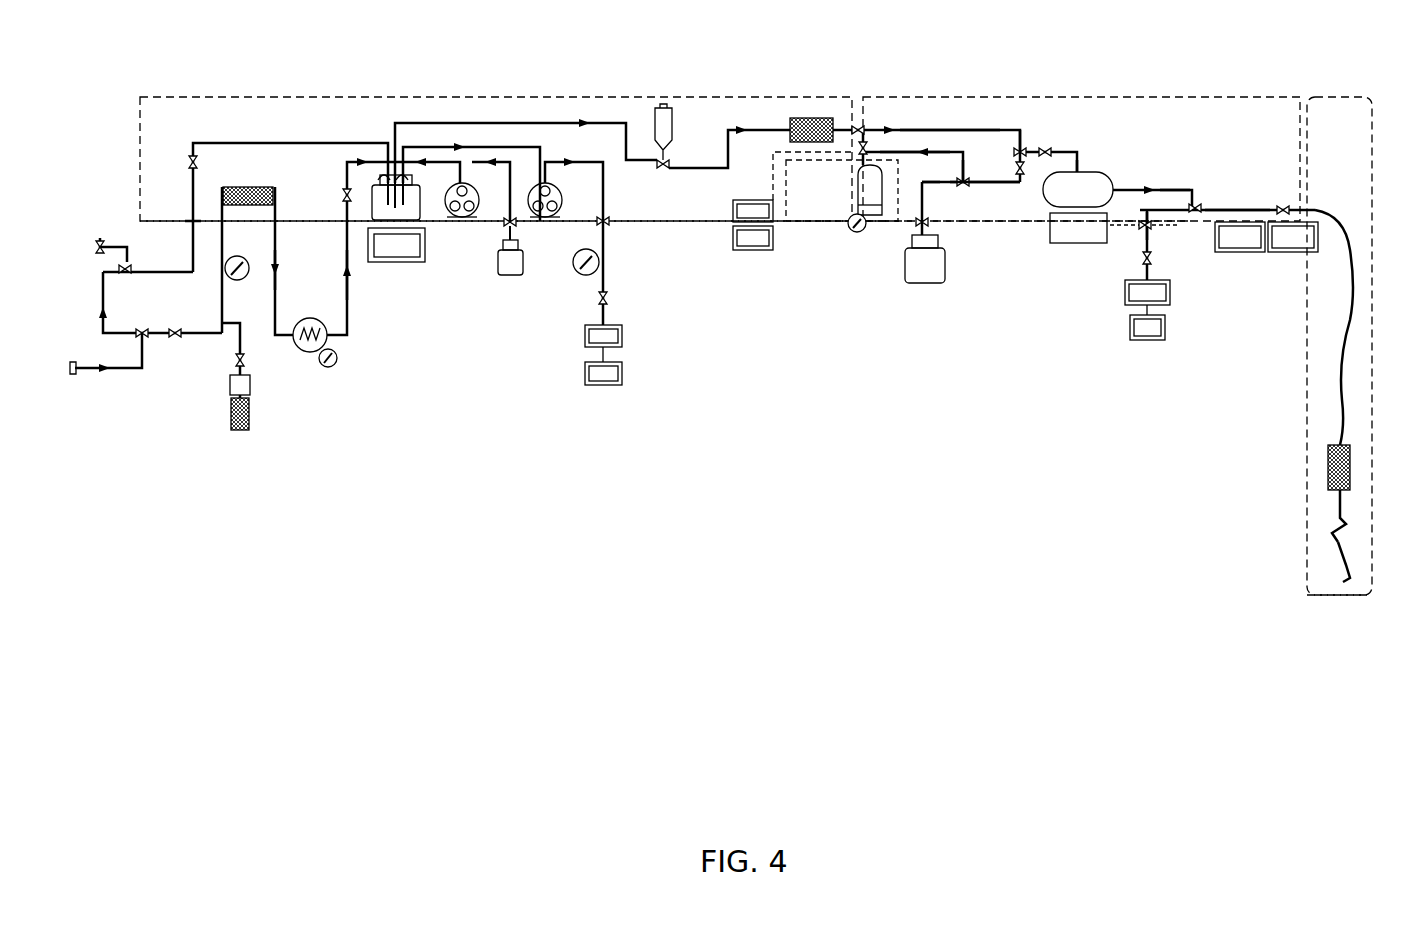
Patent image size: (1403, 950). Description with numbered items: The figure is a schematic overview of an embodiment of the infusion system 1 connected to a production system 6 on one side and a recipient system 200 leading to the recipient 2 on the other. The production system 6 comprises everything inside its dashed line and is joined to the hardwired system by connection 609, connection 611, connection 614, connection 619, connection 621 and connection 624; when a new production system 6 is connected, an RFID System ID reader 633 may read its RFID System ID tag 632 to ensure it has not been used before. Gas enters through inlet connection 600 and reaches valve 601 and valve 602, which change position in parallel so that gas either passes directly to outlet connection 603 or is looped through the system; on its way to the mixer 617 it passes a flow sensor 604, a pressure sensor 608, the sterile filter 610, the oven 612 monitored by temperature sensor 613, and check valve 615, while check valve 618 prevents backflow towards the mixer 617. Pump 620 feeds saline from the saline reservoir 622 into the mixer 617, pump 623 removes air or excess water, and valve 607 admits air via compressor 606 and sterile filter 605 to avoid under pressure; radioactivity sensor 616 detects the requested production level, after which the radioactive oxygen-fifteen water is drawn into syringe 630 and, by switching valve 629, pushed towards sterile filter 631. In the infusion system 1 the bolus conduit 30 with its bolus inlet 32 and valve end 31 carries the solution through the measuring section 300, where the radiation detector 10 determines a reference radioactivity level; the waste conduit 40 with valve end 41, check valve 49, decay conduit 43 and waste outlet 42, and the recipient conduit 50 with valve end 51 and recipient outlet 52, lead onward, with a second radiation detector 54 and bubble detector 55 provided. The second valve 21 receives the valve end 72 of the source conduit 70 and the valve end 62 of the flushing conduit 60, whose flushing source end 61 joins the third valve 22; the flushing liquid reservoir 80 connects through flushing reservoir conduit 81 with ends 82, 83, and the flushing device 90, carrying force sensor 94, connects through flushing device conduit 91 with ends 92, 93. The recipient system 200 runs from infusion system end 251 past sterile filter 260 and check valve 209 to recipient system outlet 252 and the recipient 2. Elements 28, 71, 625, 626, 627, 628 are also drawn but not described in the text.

The infusion system 1 is at (1099, 70).
The recipient 2 is at (1339, 611).
The production system 6 is at (503, 66).
The radiation detector 10 is at (1078, 228).
The second valve 21 is at (1009, 146).
The third valve 22 is at (962, 193).
The control line 28 is at (1153, 226).
The bolus conduit 30 is at (1097, 166).
The valve end 31 is at (1186, 185).
The bolus inlet 32 is at (1048, 145).
The waste conduit 40 is at (1136, 220).
The valve end 41 is at (1180, 203).
The waste outlet 42 is at (1147, 322).
The decay conduit 43 is at (1147, 292).
The check valve 49 is at (1157, 259).
The recipient conduit 50 is at (1250, 200).
The valve end 51 is at (1217, 200).
The recipient outlet 52 is at (1284, 202).
The second radiation detector 54 is at (1240, 237).
The bubble detector 55 is at (1293, 237).
The flushing conduit 60 is at (1015, 194).
The flushing source end 61 is at (990, 173).
The valve end 62 is at (1030, 171).
The source conduit 70 is at (950, 121).
The valve 71 is at (871, 121).
The valve end 72 is at (1035, 131).
The flushing liquid reservoir 80 is at (936, 259).
The flushing reservoir conduit 81 is at (922, 175).
The end 82 is at (931, 214).
The end 83 is at (952, 176).
The flushing device 90 is at (860, 190).
The flushing device conduit 91 is at (915, 144).
The end 92 is at (873, 151).
The end 93 is at (972, 164).
The force sensor 94 is at (855, 231).
The recipient system 200 is at (1351, 88).
The check valve 209 is at (1333, 531).
The infusion system end 251 is at (1334, 318).
The recipient system outlet 252 is at (1348, 571).
The sterile filter 260 is at (1328, 470).
The measuring section 300 is at (1078, 189).
The inlet connection 600 is at (89, 379).
The valve 601 is at (137, 325).
The valve 602 is at (121, 279).
The outlet connection 603 is at (99, 239).
The flow sensor 604 is at (171, 325).
The sterile filter 605 is at (257, 414).
The compressor 606 is at (257, 386).
The valve 607 is at (257, 361).
The pressure sensor 608 is at (240, 276).
The connection 609 is at (237, 236).
The sterile filter 610 is at (248, 187).
The connection 611 is at (295, 260).
The oven 612 is at (310, 327).
The temperature sensor 613 is at (346, 357).
The connection 614 is at (327, 274).
The check valve 615 is at (331, 195).
The radioactivity sensor 616 is at (396, 245).
The mixer 617 is at (423, 198).
The check valve 618 is at (177, 165).
The connection 619 is at (180, 234).
The pump 620 is at (472, 195).
The connection 621 is at (497, 232).
The saline reservoir 622 is at (509, 268).
The pump 623 is at (560, 195).
The connection 624 is at (590, 231).
The pressure gauge 625 is at (572, 269).
The valve 626 is at (619, 300).
The sensor 627 is at (603, 336).
The sensor 628 is at (603, 366).
The valve 629 is at (661, 175).
The syringe 630 is at (684, 132).
The sterile filter 631 is at (811, 121).
The RFID System ID tag 632 is at (753, 211).
The RFID System ID reader 633 is at (753, 238).